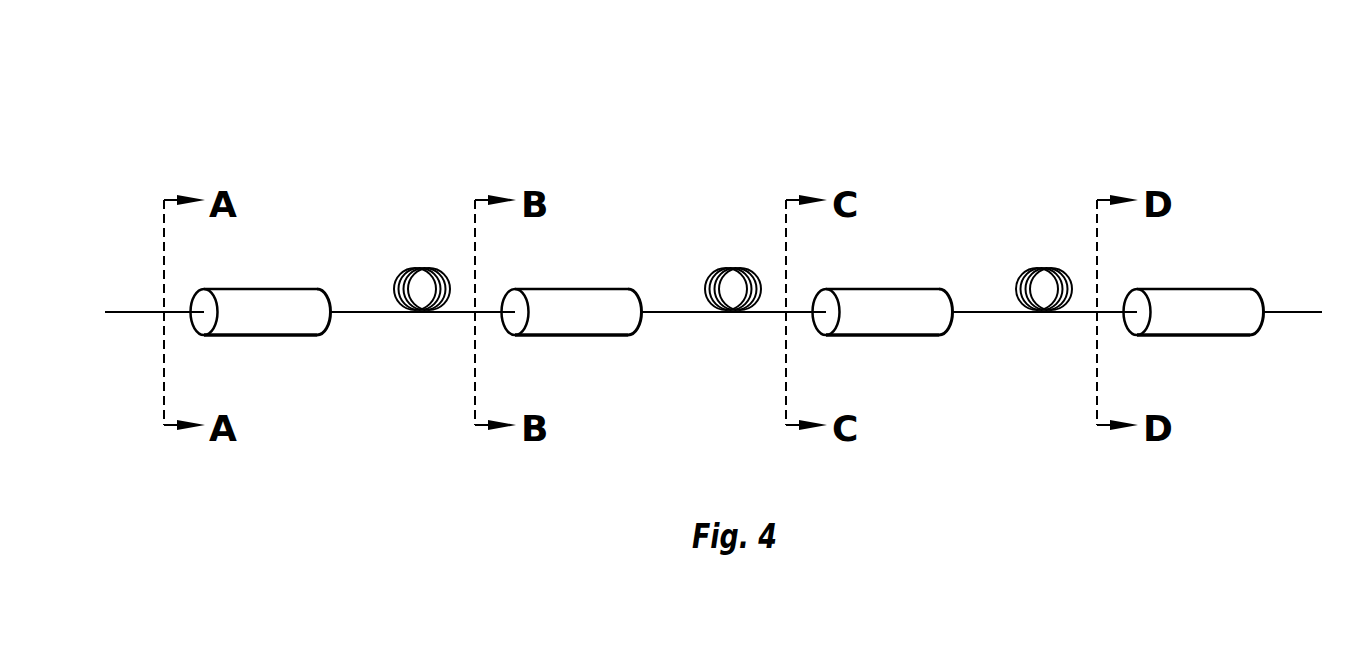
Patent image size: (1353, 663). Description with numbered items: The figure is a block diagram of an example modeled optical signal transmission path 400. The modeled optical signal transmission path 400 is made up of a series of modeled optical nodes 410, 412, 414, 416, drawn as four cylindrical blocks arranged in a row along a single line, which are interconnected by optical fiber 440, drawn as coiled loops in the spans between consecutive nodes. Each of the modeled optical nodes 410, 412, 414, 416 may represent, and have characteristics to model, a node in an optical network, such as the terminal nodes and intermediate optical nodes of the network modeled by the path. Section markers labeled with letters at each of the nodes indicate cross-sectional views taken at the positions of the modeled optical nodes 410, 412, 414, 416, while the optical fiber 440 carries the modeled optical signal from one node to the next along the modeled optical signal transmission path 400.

The modeled optical signal transmission path 400 is at (969, 98).
The modeled optical node 410 is at (263, 289).
The modeled optical node 412 is at (574, 289).
The modeled optical node 414 is at (885, 289).
The modeled optical node 416 is at (1196, 289).
The optical fiber 440 is at (423, 268).